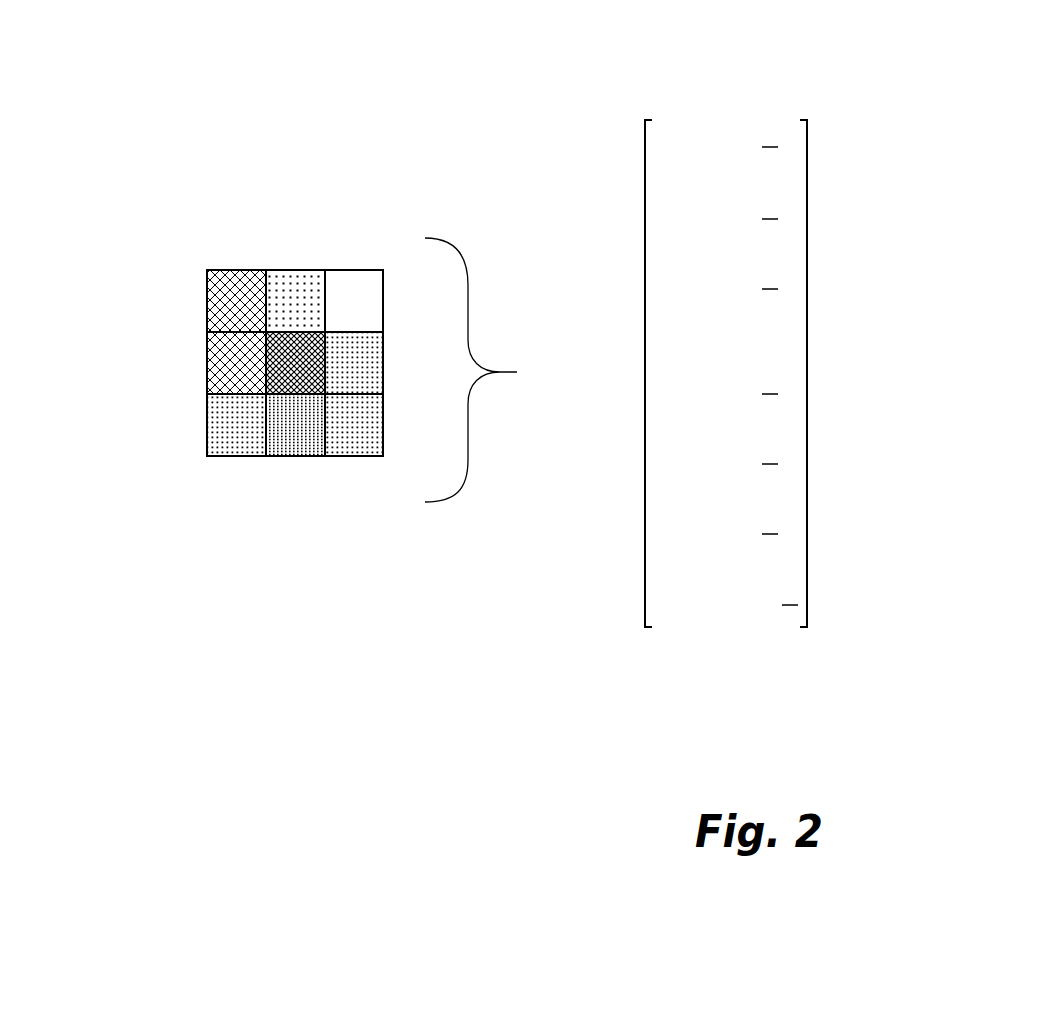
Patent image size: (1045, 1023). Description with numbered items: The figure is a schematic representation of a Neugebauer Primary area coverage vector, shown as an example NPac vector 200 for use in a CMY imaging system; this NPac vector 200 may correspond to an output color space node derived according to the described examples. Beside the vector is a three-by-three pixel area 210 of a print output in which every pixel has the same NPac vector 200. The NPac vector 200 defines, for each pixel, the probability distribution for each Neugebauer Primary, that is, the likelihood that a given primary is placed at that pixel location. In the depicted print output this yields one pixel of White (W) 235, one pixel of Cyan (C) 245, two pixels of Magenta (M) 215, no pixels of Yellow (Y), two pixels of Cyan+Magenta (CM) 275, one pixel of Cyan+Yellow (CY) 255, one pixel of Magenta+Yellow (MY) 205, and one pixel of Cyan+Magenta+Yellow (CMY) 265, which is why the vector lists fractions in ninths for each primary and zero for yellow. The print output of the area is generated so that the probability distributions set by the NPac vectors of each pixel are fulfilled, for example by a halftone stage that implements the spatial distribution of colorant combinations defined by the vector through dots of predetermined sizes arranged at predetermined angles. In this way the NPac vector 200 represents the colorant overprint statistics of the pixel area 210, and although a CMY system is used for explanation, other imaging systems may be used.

The NPac vector 200 is at (749, 66).
The three-by-three pixel area 210 is at (107, 272).
The pixels of Cyan+Magenta (CM) 275 is at (212, 280).
The pixel of Magenta+Yellow (MY) 205 is at (290, 280).
The pixel of White (W) 235 is at (348, 283).
The pixels of Magenta (M) 215 is at (363, 377).
The pixel of Cyan (C) 245 is at (363, 433).
The pixel of Cyan+Yellow (CY) 255 is at (297, 423).
The pixel of Cyan+Magenta+Yellow (CMY) 265 is at (283, 360).